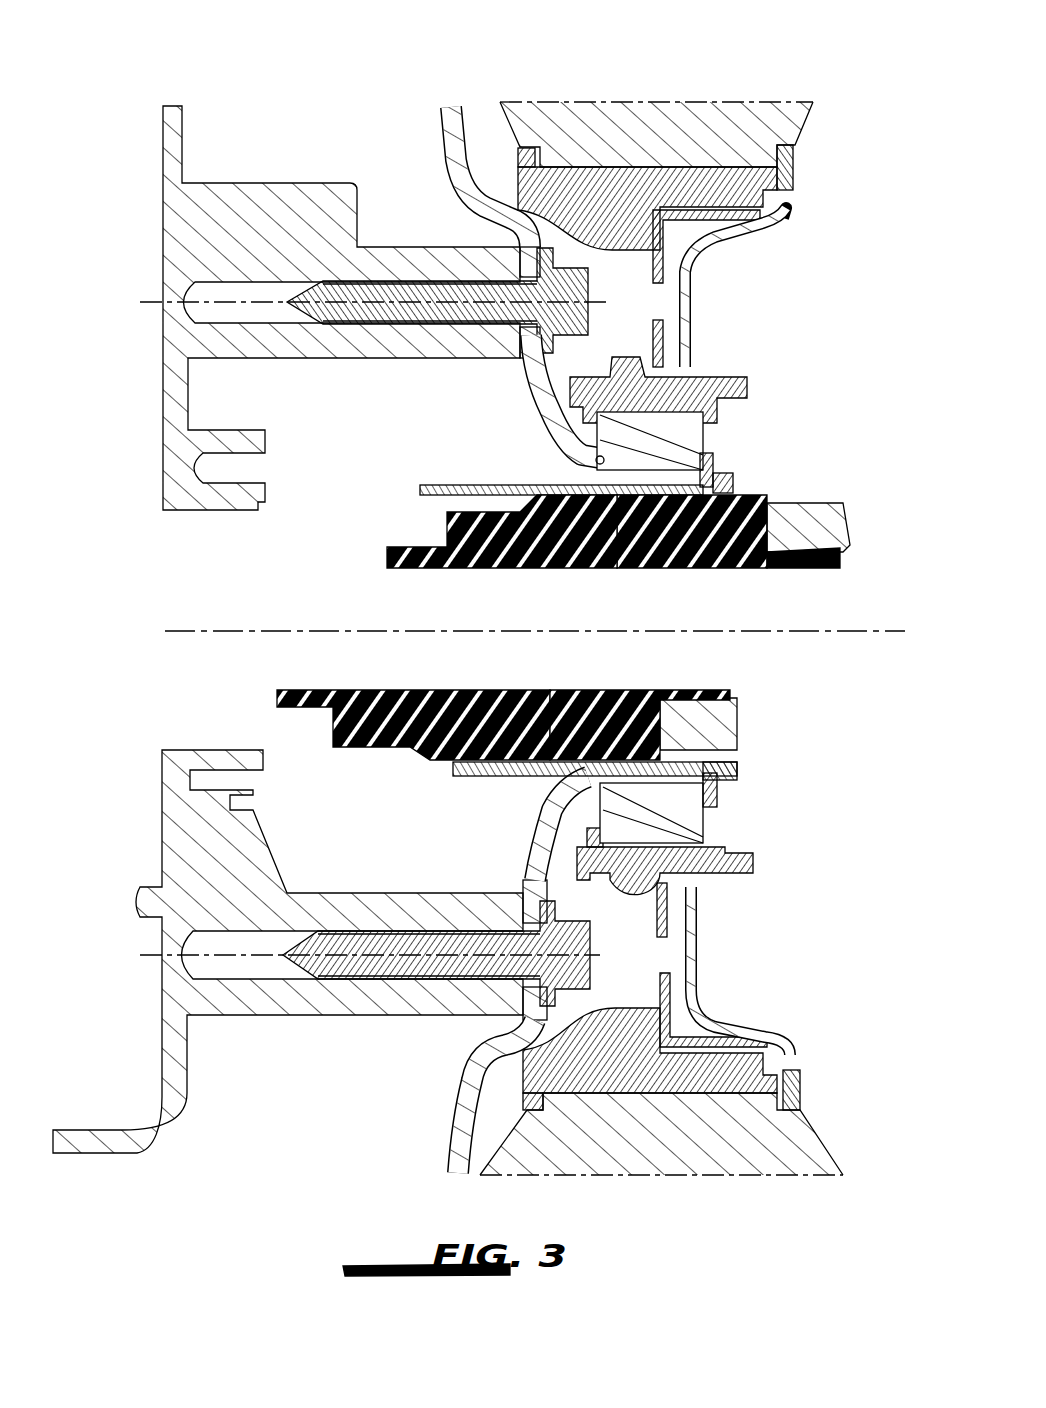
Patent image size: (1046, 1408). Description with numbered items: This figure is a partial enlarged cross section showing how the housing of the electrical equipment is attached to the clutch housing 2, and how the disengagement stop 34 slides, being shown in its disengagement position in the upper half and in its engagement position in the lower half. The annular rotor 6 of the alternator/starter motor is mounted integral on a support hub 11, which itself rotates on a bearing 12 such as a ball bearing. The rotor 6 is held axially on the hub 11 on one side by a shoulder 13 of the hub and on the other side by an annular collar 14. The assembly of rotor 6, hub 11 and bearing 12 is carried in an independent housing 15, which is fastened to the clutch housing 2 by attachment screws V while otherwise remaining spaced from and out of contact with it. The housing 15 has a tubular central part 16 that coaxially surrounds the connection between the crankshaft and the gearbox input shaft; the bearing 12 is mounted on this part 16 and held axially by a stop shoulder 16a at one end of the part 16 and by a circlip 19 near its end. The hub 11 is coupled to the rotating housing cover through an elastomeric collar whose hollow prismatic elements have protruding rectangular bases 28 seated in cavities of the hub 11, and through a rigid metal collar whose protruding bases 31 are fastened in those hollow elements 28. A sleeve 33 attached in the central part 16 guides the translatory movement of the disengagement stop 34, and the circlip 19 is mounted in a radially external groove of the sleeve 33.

The clutch housing 2 is at (180, 198).
The annular rotor 6 is at (647, 137).
The support hub 11 is at (677, 190).
The bearing 12 is at (657, 447).
The shoulder 13 is at (478, 110).
The annular collar 14 is at (795, 170).
The independent housing 15 is at (432, 152).
The tubular central part 16 is at (615, 562).
The stop shoulder 16a is at (600, 463).
The circlip 19 is at (717, 793).
The hollow prismatic element bases 28 is at (652, 275).
The prismatic element bases 31 is at (687, 307).
The sleeve 33 is at (553, 737).
The disengagement stop 34 is at (487, 562).
The attachment screws V is at (400, 313).